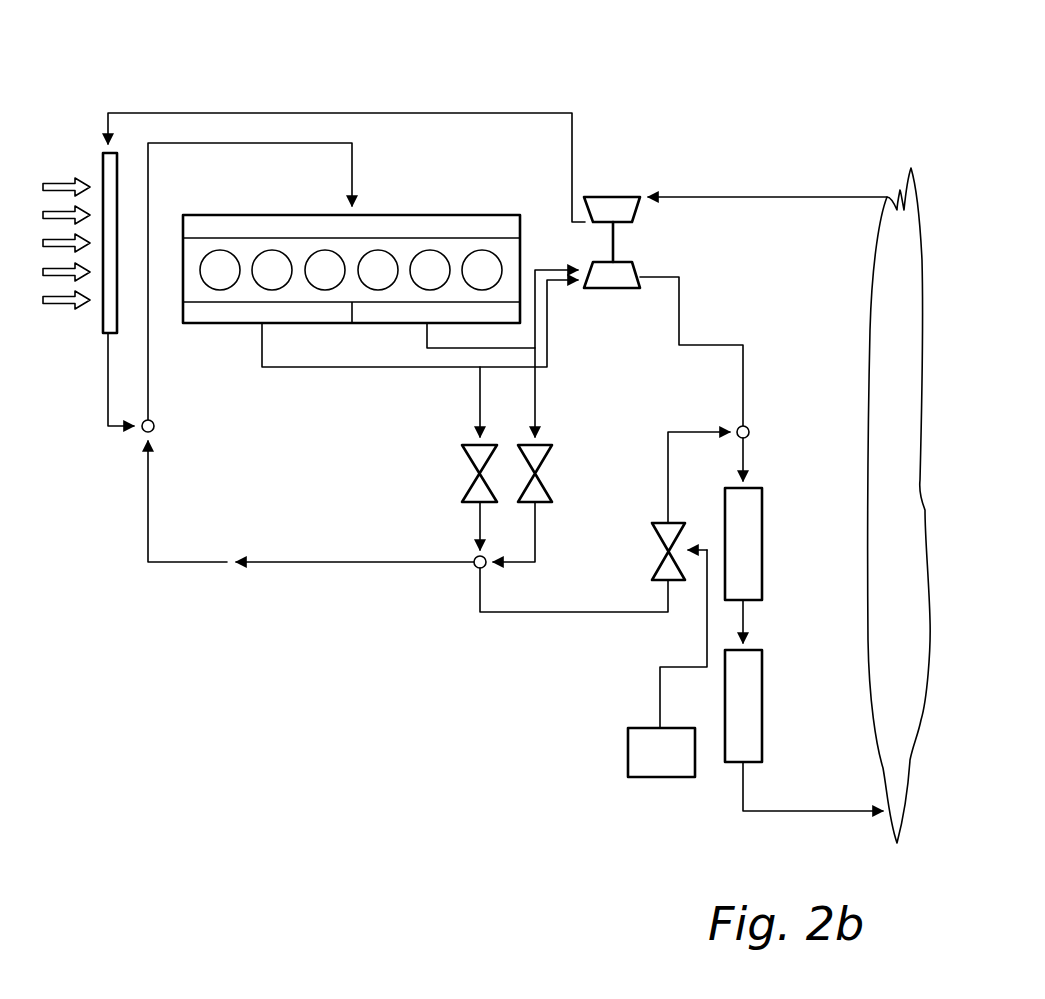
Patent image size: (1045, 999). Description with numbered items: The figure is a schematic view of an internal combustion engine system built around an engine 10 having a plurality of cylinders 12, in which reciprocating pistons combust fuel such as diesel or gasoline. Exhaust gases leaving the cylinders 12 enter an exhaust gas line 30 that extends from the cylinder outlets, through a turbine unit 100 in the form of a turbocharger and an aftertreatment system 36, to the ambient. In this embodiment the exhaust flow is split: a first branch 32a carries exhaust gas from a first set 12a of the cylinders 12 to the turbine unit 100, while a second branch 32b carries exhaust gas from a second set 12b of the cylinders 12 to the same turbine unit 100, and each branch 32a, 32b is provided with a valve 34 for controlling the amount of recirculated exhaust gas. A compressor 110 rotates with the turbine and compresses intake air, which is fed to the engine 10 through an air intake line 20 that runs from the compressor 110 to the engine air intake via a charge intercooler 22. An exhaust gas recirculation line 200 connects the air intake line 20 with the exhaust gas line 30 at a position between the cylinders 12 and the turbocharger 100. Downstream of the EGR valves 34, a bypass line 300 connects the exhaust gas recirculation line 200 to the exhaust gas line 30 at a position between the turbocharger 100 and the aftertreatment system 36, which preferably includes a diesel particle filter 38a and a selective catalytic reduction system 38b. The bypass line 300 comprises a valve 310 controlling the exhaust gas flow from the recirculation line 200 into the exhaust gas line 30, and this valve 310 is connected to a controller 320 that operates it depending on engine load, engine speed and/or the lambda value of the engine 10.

The internal combustion engine 10 is at (482, 213).
The cylinders 12 is at (351, 270).
The first set of cylinders 12a is at (272, 222).
The second set of cylinders 12b is at (446, 224).
The air intake line 20 is at (288, 113).
The charge intercooler 22 is at (100, 318).
The exhaust gas line 30 is at (330, 367).
The first branch 32a is at (262, 348).
The second branch 32b is at (562, 268).
The valve 34 is at (465, 455).
The aftertreatment system 36 is at (806, 627).
The diesel particle filter 38a is at (763, 530).
The selective catalytic reduction system 38b is at (757, 718).
The turbine unit 100 is at (644, 162).
The compressor 110 is at (601, 196).
The exhaust gas recirculation line 200 is at (245, 594).
The bypass line 300 is at (612, 612).
The valve 310 is at (650, 573).
The controller 320 is at (628, 742).